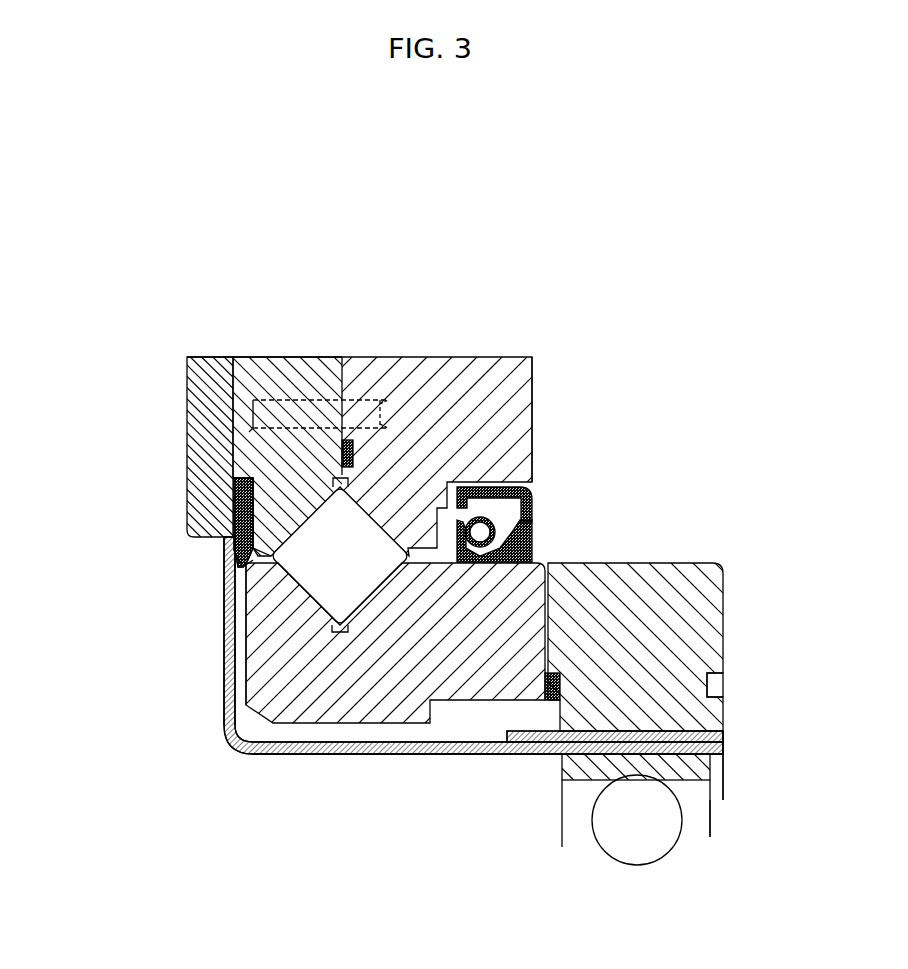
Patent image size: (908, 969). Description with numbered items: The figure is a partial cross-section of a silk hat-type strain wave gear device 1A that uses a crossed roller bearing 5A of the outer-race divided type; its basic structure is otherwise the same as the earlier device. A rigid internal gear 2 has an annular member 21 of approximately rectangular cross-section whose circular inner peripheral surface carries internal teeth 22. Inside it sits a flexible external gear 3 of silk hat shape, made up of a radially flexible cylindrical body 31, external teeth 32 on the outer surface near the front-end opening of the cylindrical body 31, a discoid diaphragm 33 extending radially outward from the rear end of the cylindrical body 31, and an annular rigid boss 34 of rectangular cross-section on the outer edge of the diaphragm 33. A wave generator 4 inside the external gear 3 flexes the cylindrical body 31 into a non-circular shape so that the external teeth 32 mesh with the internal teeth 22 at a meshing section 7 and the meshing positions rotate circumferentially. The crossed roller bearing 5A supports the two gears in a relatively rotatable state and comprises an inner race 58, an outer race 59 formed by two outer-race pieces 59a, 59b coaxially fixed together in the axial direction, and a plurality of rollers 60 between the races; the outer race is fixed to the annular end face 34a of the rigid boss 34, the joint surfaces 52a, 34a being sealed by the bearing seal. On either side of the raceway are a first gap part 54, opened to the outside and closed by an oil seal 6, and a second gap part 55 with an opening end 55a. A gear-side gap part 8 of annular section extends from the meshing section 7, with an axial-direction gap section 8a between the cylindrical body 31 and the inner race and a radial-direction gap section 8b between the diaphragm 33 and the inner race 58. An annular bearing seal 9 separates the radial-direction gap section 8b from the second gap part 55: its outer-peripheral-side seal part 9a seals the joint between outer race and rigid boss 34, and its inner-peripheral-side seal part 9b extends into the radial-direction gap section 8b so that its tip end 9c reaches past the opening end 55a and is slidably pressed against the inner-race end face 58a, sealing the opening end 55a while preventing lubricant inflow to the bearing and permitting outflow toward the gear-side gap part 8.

The silk hat-type strain wave gear device 1A is at (693, 427).
The rigid internal gear 2 is at (727, 640).
The annular member 21 is at (667, 600).
The internal teeth 22 is at (673, 733).
The flexible external gear 3 is at (433, 762).
The cylindrical body 31 is at (322, 752).
The external teeth 32 is at (600, 745).
The wave generator 4 is at (713, 826).
The crossed roller bearing 5A is at (563, 373).
The joint surface of outer race 52a is at (197, 357).
The first gap part 54 is at (418, 555).
The second gap part 55 is at (400, 357).
The opening end 55a is at (255, 548).
The inner race 58 is at (462, 632).
The inner-race end face 58a is at (253, 603).
The outer race 59 is at (380, 204).
The outer-race piece 59a is at (275, 540).
The outer-race piece 59b is at (340, 410).
The oil seal 6 is at (538, 523).
The rollers 60 is at (362, 542).
The meshing section 7 is at (545, 745).
The gear-side gap part 8 is at (290, 735).
The axial-direction gap section 8a is at (405, 745).
The radial-direction gap section 8b is at (233, 665).
The bearing seal 9 is at (228, 508).
The outer-peripheral-side seal part 9a is at (243, 523).
The inner-peripheral-side seal part 9b is at (243, 563).
The tip end 9c is at (240, 572).
The diaphragm 33 is at (230, 638).
The rigid boss 34 is at (187, 376).
The annular end face 34a is at (275, 357).